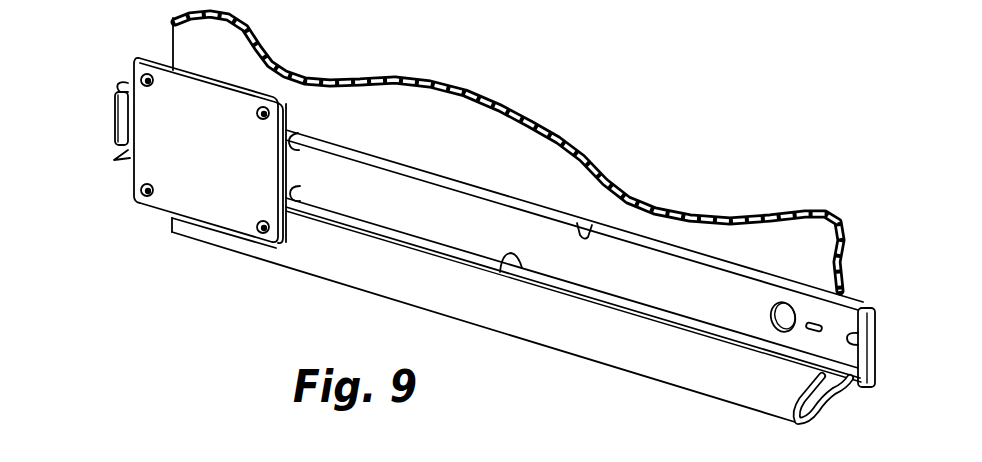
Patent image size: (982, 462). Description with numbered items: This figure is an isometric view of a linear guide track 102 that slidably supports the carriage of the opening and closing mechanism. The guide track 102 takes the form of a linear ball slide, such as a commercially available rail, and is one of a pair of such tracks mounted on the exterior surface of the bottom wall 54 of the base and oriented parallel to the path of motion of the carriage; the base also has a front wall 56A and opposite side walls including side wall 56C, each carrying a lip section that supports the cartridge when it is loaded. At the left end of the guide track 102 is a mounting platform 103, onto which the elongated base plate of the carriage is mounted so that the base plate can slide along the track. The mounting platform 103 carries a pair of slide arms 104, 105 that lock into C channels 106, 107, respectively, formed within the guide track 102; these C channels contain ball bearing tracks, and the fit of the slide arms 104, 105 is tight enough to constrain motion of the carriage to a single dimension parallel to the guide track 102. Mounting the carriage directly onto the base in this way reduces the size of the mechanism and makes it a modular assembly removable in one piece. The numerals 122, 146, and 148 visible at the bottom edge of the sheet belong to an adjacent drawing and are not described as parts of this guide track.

The bottom wall 54 is at (482, 118).
The front wall 56A is at (170, 218).
The side wall 56C is at (829, 404).
The linear guide track 102 is at (648, 263).
The mounting platform 103 is at (138, 125).
The slide arm 104 is at (299, 147).
The slide arm 105 is at (298, 200).
The C channel 106 is at (592, 230).
The C channel 107 is at (503, 268).
The element 122 is at (345, 452).
The element 146 is at (475, 453).
The element 148 is at (427, 461).